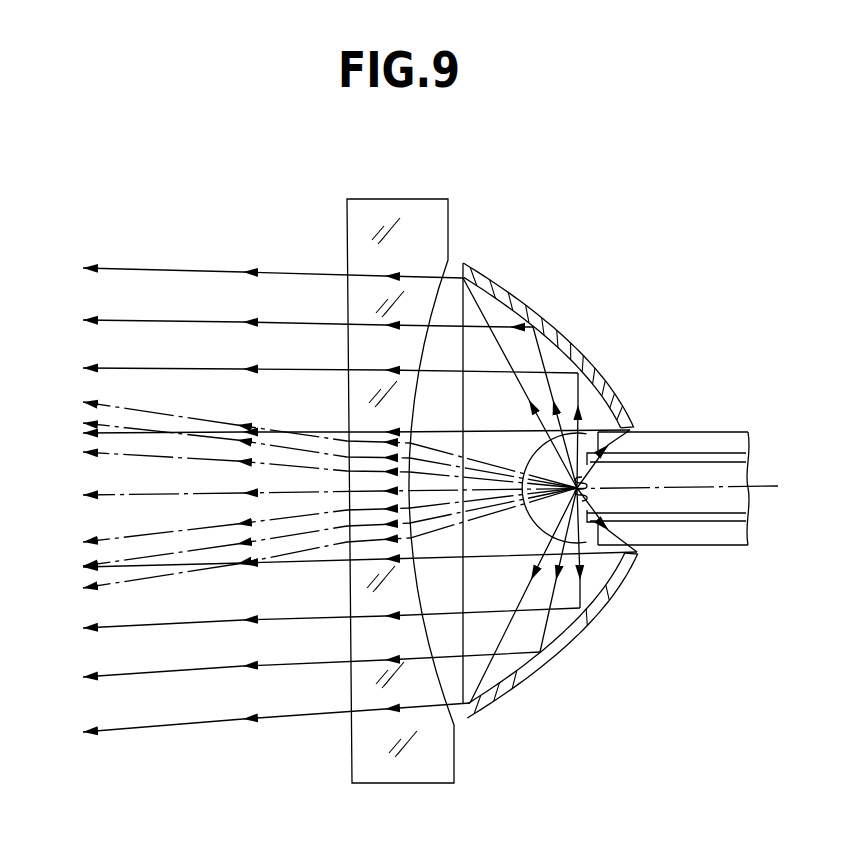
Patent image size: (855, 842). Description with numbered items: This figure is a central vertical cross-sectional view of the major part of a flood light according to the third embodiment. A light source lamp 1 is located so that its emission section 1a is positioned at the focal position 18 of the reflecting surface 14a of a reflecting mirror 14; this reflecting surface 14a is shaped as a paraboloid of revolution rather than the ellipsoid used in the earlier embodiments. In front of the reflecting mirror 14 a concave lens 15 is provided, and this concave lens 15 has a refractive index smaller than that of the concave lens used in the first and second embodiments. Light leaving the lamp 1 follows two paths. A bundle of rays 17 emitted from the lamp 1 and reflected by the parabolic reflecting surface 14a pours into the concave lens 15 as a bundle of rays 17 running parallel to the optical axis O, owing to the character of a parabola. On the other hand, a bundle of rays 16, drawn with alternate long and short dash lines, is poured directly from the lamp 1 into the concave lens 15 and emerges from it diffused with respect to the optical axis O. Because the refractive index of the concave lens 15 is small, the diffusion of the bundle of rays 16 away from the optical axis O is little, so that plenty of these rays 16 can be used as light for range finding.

The light source lamp 1 is at (651, 448).
The emission section 1a is at (596, 487).
The reflecting mirror 14 is at (550, 452).
The reflecting surface 14a is at (502, 318).
The concave lens 15 is at (383, 222).
The bundle of rays 16 is at (180, 412).
The bundle of rays 17 is at (116, 268).
The focal position 18 is at (584, 478).
The optical axis O is at (166, 495).